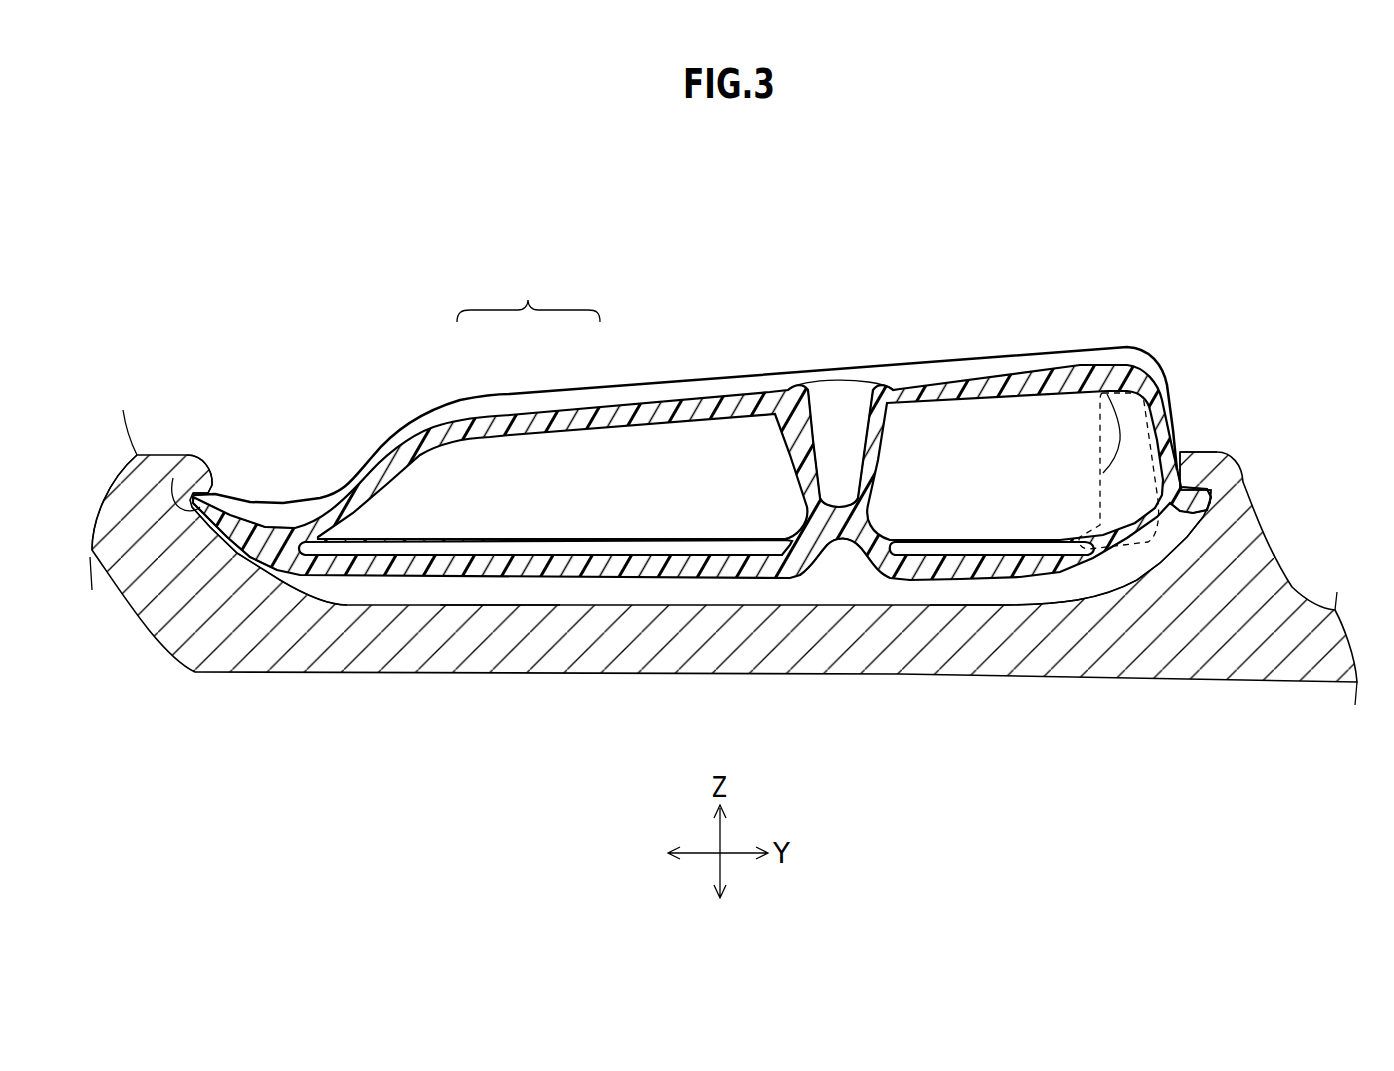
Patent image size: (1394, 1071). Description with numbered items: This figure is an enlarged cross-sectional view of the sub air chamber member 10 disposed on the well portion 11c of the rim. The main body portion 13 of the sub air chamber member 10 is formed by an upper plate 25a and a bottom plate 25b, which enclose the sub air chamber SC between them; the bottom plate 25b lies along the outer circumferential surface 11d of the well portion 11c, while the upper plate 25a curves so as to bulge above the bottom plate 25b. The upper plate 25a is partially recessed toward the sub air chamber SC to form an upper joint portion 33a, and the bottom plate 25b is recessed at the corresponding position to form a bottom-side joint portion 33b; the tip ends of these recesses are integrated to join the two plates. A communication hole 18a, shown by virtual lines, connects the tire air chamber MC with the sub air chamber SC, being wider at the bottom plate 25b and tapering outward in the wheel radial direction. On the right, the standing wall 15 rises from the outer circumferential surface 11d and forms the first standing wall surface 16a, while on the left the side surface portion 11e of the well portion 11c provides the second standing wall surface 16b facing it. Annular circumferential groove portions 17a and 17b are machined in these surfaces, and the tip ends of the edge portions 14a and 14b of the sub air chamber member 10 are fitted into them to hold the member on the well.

The sub air chamber member 10 is at (998, 322).
The well portion 11c is at (986, 593).
The outer circumferential surface 11d is at (497, 608).
The side surface portion 11e is at (168, 528).
The main body portion 13 is at (528, 296).
The edge portion 14a is at (1187, 500).
The edge portion 14b is at (262, 532).
The standing wall 15 is at (1222, 518).
The first standing wall surface 16a is at (1157, 562).
The second standing wall surface 16b is at (238, 560).
The groove portion 17a is at (1218, 508).
The groove portion 17b is at (192, 453).
The communication hole 18a is at (1078, 362).
The upper plate 25a is at (607, 383).
The bottom plate 25b is at (524, 556).
The upper joint portion 33a is at (840, 430).
The bottom-side joint portion 33b is at (840, 560).
The tire air chamber MC is at (733, 338).
The sub air chamber SC is at (622, 503).